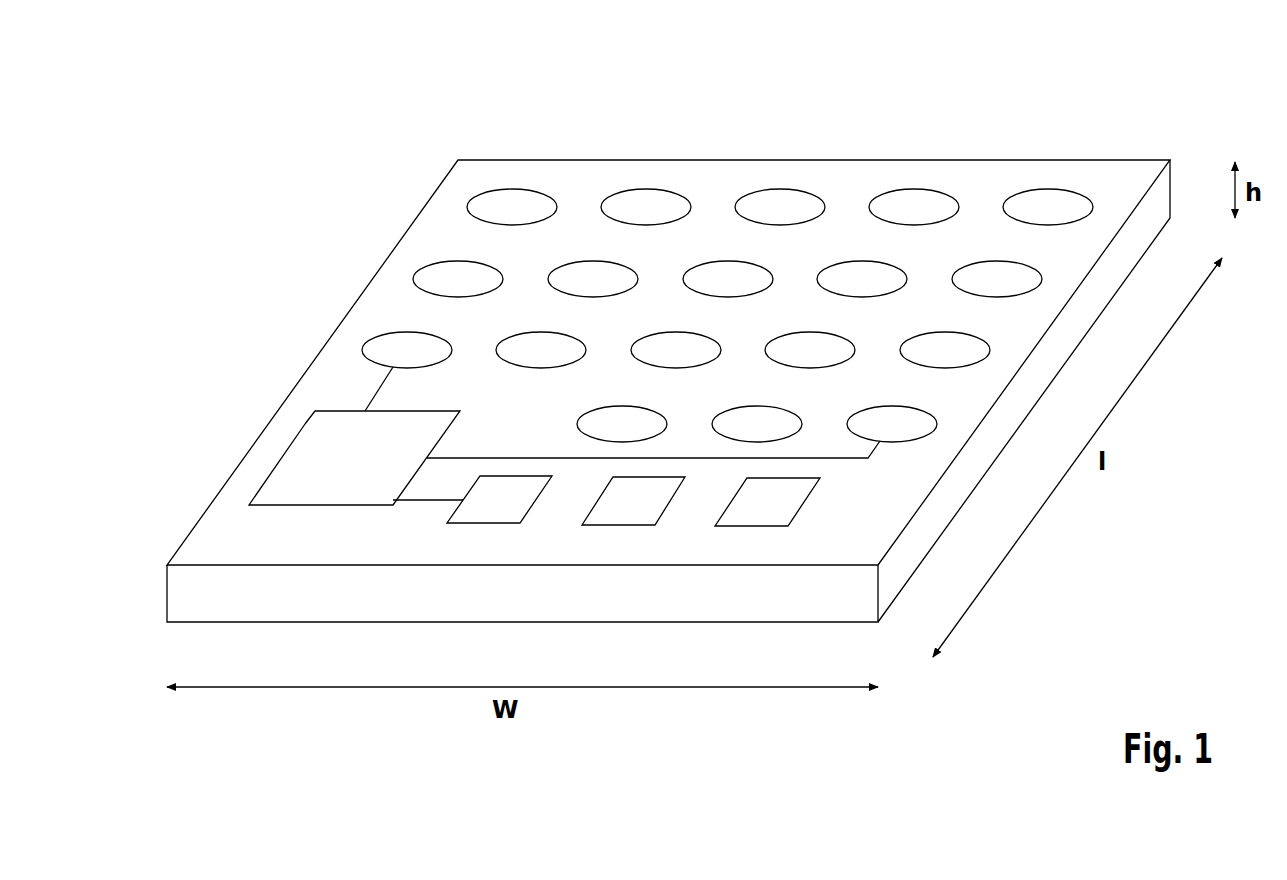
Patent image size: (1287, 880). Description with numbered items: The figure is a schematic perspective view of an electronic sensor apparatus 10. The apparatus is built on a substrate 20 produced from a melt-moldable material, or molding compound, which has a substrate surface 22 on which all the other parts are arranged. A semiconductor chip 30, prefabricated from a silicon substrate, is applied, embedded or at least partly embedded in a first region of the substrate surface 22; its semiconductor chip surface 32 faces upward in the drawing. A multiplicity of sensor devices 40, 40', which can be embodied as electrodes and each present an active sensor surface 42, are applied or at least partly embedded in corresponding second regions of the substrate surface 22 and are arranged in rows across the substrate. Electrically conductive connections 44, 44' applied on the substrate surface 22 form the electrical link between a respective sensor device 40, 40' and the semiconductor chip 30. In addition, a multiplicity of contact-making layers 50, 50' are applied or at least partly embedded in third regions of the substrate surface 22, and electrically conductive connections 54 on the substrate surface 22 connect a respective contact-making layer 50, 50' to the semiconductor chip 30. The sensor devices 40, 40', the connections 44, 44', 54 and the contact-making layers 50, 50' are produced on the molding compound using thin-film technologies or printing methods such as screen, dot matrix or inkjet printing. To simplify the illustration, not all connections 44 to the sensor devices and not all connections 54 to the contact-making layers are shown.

The electronic sensor apparatus 10 is at (222, 122).
The substrate 20 is at (200, 517).
The substrate surface 22 is at (452, 185).
The semiconductor chip 30 is at (267, 477).
The semiconductor chip surface 32 is at (318, 432).
The sensor device 40 is at (718, 315).
The sensor device 40' is at (780, 166).
The active sensor surface 42 is at (522, 184).
The electrically conductive connection 44 is at (351, 371).
The electrically conductive connection 44' is at (682, 535).
The contact-making layer 50 is at (499, 569).
The contact-making layer 50' is at (701, 570).
The electrically conductive connection 54 is at (422, 500).